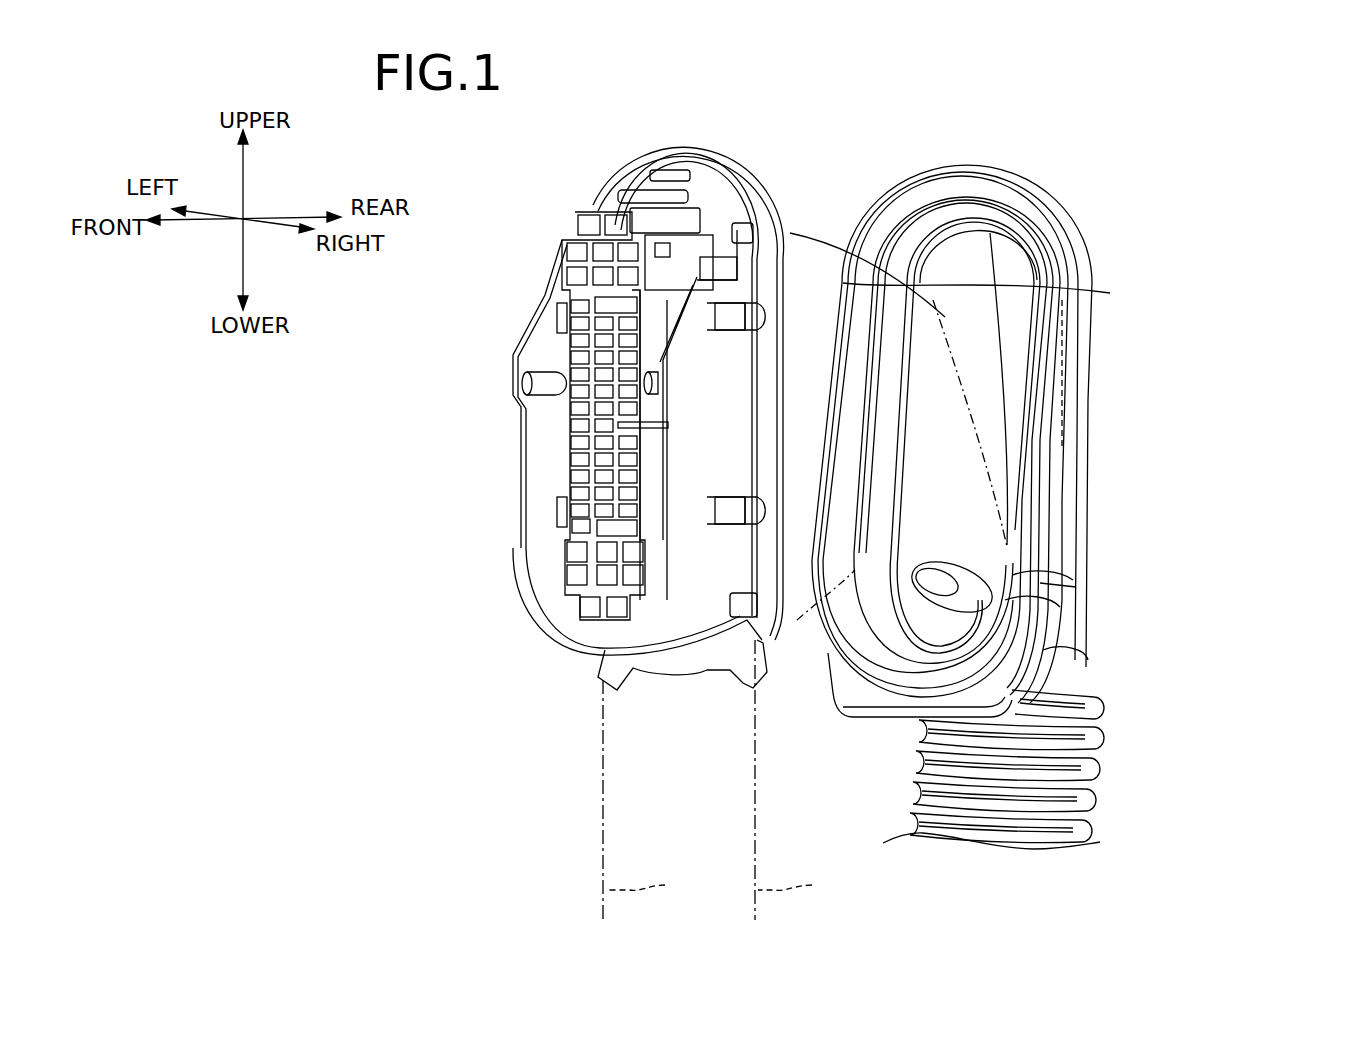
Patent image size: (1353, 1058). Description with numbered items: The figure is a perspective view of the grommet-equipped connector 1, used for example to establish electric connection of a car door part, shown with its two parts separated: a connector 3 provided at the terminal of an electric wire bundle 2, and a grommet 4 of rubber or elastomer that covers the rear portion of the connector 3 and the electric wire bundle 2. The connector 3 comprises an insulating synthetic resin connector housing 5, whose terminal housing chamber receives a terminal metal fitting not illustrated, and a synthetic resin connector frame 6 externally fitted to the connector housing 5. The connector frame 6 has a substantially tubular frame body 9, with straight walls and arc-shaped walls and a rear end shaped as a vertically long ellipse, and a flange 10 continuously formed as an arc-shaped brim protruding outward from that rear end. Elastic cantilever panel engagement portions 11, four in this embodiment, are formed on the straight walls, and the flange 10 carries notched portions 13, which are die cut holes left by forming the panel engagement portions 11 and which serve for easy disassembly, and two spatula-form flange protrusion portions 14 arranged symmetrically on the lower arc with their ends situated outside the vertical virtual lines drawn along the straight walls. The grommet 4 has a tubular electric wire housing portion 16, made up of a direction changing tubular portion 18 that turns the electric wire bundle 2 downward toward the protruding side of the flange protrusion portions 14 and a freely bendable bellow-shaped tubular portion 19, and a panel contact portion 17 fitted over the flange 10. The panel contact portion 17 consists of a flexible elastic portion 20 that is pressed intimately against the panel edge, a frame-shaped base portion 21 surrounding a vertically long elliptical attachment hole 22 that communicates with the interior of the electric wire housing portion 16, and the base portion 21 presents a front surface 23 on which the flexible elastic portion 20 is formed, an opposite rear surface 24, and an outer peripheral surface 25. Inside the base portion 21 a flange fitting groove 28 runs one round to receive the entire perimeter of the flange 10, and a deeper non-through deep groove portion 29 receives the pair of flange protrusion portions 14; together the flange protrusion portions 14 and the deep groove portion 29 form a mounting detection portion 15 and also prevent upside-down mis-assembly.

The grommet-equipped connector 1 is at (870, 506).
The electric wire bundle 2 is at (638, 427).
The connector 3 is at (601, 447).
The grommet 4 is at (1097, 250).
The connector housing 5 is at (575, 455).
The connector frame 6 is at (520, 425).
The frame body 9 is at (727, 368).
The flange 10 is at (713, 178).
The panel engagement portions 11 is at (735, 308).
The notched portions 13 is at (762, 318).
The flange protrusion portions 14 is at (607, 677).
The mounting detection portion 15 is at (1216, 796).
The electric wire housing portion 16 is at (1091, 687).
The panel contact portion 17 is at (1070, 402).
The direction changing tubular portion 18 is at (1075, 525).
The bellow-shaped tubular portion 19 is at (1090, 687).
The flexible elastic portion 20 is at (1034, 447).
The base portion 21 is at (1070, 215).
The attachment hole 22 is at (985, 472).
The front surface 23 is at (1072, 302).
The rear surface 24 is at (1090, 305).
The outer peripheral surface 25 is at (1077, 338).
The flange fitting groove 28 is at (923, 224).
The deep groove portion 29 is at (850, 697).